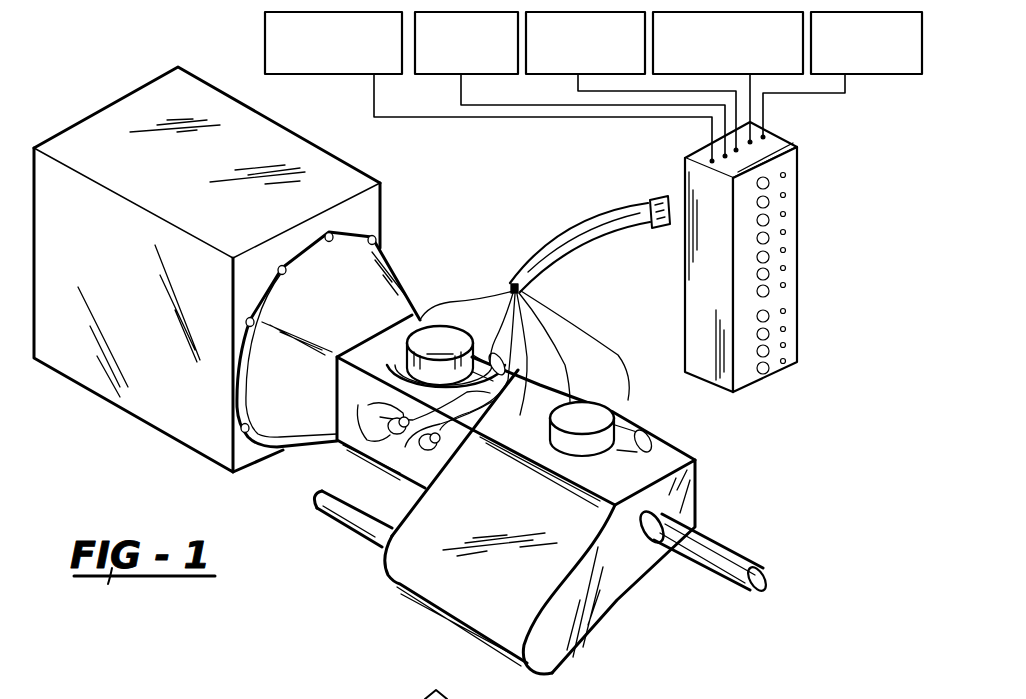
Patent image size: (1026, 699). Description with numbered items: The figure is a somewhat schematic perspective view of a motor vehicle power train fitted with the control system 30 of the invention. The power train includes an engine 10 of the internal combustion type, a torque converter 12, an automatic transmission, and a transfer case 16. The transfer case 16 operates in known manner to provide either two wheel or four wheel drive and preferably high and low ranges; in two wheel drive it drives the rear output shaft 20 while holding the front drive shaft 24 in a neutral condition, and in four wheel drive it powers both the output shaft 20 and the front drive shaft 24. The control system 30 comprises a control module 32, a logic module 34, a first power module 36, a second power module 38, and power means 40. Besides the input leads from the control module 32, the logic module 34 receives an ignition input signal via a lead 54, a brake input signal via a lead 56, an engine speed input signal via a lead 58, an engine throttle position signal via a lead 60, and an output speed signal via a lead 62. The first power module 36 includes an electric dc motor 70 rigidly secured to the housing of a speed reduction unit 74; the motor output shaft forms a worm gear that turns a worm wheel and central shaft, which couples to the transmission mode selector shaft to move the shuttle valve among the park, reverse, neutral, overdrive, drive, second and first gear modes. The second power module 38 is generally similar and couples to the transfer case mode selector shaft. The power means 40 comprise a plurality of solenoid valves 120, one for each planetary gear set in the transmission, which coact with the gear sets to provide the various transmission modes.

The engine 10 is at (150, 360).
The torque converter 12 is at (272, 388).
The transfer case 16 is at (593, 613).
The output shaft 20 is at (738, 553).
The front drive shaft 24 is at (365, 547).
The control system 30 is at (712, 450).
The control module 32 is at (798, 282).
The logic module 34 is at (710, 158).
The first power module 36 is at (422, 339).
The second power module 38 is at (580, 449).
The power means 40 is at (417, 456).
The lead 54 is at (374, 92).
The lead 56 is at (461, 91).
The lead 58 is at (578, 84).
The lead 60 is at (753, 80).
The lead 62 is at (840, 95).
The electric dc motor 70 is at (400, 379).
The speed reduction unit 74 is at (400, 332).
The solenoid valves 120 is at (470, 480).